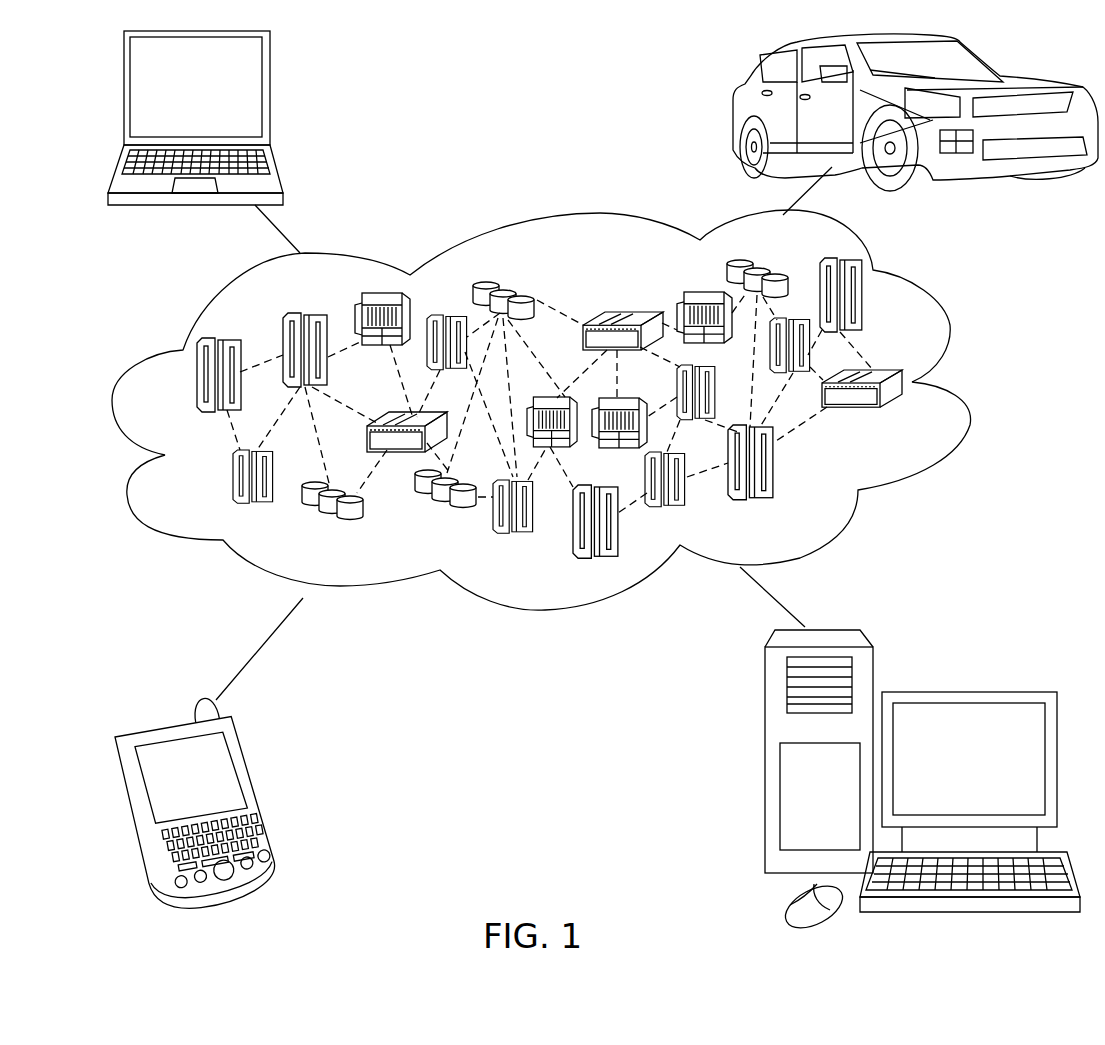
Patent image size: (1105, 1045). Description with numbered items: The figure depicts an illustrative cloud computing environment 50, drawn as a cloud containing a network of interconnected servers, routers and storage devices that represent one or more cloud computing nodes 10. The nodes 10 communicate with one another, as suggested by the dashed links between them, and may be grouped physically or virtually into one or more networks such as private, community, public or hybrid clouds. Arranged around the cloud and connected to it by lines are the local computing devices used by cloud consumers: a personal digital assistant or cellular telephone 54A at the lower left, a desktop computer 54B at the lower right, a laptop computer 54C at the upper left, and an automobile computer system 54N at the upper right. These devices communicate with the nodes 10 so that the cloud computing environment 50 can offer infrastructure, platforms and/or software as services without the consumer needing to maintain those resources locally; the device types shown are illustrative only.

The cloud computing nodes 10 is at (905, 418).
The cloud computing environment 50 is at (965, 383).
The personal digital assistant (PDA) or cellular telephone 54A is at (257, 792).
The desktop computer 54B is at (966, 692).
The laptop computer 54C is at (270, 95).
The automobile computer system 54N is at (735, 112).